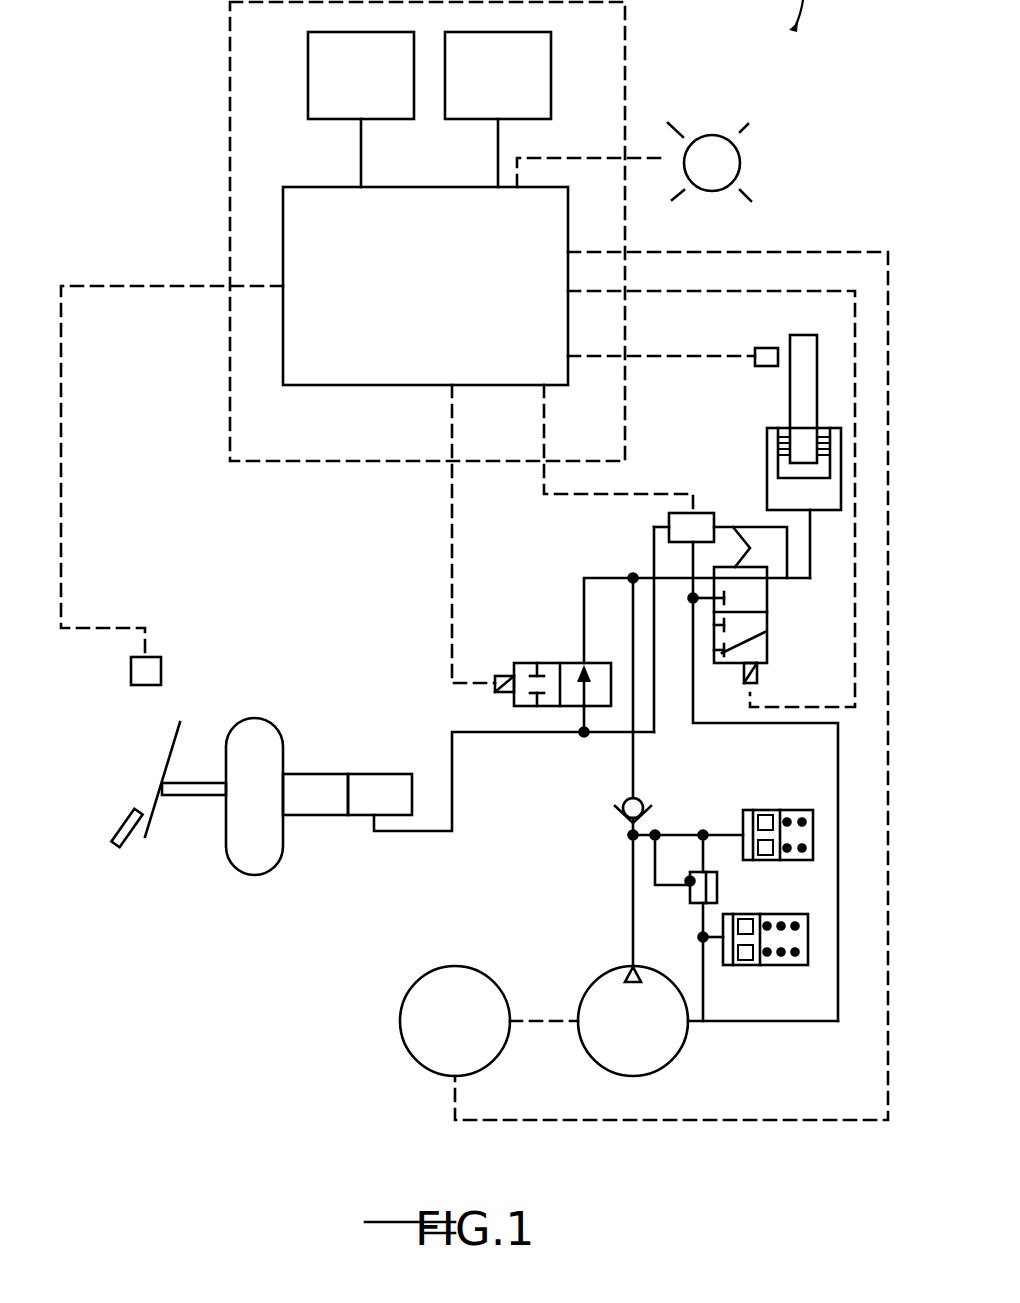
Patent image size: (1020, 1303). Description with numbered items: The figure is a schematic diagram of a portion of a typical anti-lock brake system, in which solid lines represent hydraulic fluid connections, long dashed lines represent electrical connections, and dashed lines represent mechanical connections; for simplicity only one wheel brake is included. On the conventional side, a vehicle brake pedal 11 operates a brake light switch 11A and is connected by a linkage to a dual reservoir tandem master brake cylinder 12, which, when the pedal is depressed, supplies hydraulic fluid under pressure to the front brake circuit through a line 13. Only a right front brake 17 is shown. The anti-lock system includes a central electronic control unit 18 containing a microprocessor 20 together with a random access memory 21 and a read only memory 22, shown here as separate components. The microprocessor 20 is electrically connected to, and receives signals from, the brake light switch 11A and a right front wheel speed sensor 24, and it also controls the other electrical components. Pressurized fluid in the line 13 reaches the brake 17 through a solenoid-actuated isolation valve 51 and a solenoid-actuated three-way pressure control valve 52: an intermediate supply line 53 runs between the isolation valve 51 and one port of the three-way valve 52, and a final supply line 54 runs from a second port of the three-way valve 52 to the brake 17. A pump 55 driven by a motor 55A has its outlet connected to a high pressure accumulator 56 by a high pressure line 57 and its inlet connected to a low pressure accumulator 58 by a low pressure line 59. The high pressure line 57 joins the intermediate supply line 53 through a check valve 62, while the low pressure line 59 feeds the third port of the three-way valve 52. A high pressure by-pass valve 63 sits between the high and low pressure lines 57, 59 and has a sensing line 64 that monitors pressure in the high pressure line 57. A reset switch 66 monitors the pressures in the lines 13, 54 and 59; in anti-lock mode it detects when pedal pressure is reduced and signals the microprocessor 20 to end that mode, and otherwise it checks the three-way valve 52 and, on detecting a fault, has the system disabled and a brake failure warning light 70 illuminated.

The brake pedal 11 is at (120, 812).
The brake light switch 11A is at (131, 672).
The dual reservoir tandem master brake cylinder 12 is at (335, 772).
The line 13 is at (453, 767).
The right front brake 17 is at (850, 456).
The central electronic control unit 18 is at (606, 38).
The microprocessor 20 is at (334, 376).
The random access memory (RAM) 21 is at (342, 42).
The read only memory (ROM) 22 is at (487, 42).
The right front wheel speed sensor 24 is at (758, 348).
The isolation valve 51 is at (550, 660).
The three-way pressure control valve 52 is at (772, 615).
The intermediate supply line 53 is at (598, 577).
The final supply line 54 is at (810, 532).
The pump 55 is at (677, 1053).
The motor 55A is at (493, 1062).
The high pressure accumulator 56 is at (780, 810).
The high pressure line 57 is at (630, 903).
The low pressure accumulator 58 is at (758, 915).
The low pressure line 59 is at (757, 1020).
The check valve 62 is at (644, 797).
The high pressure by-pass valve 63 is at (688, 893).
The sensing line 64 is at (657, 862).
The reset switch 66 is at (715, 515).
The brake failure warning light 70 is at (707, 134).